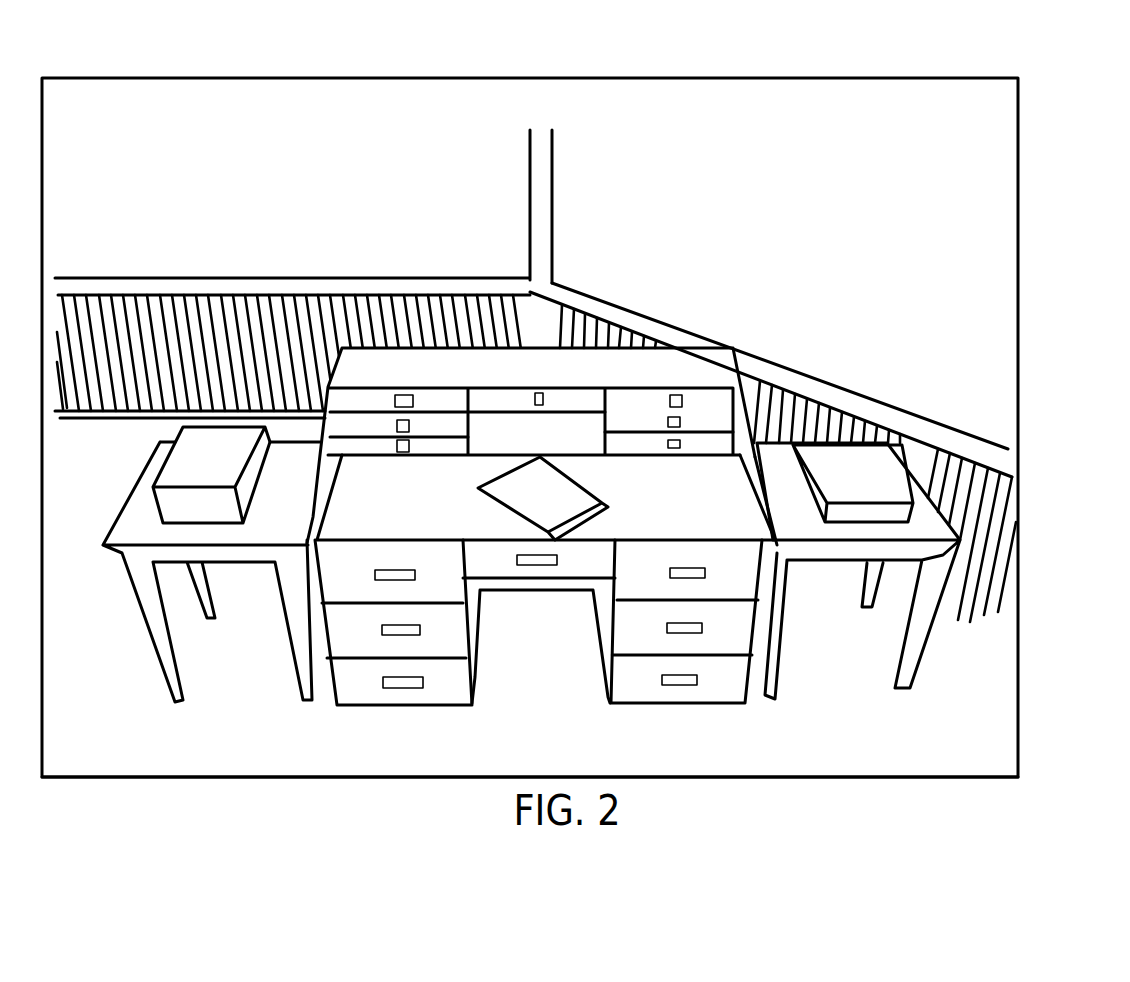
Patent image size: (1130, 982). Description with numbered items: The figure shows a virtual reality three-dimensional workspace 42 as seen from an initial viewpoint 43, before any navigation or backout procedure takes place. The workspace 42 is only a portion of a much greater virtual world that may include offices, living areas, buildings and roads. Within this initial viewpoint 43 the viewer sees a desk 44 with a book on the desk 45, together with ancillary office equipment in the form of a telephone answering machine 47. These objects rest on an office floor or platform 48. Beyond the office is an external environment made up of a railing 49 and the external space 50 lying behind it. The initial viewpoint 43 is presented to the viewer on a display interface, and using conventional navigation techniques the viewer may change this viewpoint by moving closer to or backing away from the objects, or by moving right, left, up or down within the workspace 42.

The workspace 42 is at (947, 430).
The initial viewpoint 43 is at (713, 777).
The desk 44 is at (415, 497).
The book on the desk 45 is at (525, 487).
The telephone answering machine 47 is at (210, 447).
The office floor or platform 48 is at (378, 742).
The railing 49 is at (193, 283).
The external space 50 is at (334, 225).